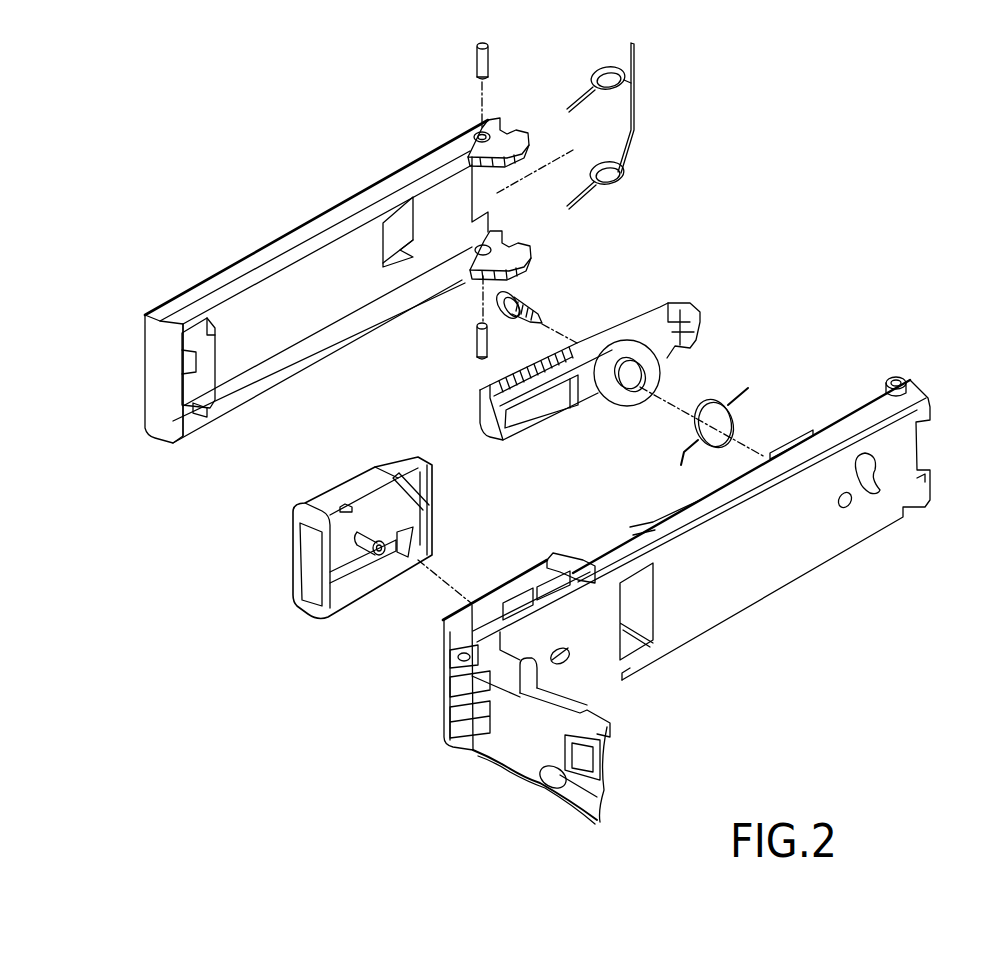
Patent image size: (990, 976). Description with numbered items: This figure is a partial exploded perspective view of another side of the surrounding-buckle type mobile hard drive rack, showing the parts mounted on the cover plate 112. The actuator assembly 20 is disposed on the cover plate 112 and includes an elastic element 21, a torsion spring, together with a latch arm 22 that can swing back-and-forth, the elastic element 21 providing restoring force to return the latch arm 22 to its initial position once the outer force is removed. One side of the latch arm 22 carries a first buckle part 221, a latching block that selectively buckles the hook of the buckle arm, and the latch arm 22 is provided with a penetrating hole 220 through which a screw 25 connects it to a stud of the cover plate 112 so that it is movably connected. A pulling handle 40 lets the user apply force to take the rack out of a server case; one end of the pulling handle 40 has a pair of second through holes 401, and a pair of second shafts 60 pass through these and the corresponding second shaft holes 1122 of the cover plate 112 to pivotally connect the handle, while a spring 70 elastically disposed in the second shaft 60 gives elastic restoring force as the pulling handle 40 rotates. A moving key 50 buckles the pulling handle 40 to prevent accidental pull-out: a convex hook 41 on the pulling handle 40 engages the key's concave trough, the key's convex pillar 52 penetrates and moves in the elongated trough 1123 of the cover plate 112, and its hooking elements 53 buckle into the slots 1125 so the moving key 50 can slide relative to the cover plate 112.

The actuator assembly 20 is at (704, 280).
The elastic element 21 is at (738, 423).
The latch arm 22 is at (612, 325).
The screw 25 is at (542, 322).
The pulling handle 40 is at (292, 236).
The convex hook 41 is at (212, 372).
The moving key 50 is at (342, 492).
The convex pillar 52 is at (433, 527).
The hooking element 53 is at (398, 474).
The second shaft 60 is at (476, 59).
The spring 70 is at (600, 67).
The cover plate 112 is at (800, 556).
The penetrating hole 220 is at (630, 380).
The first buckle part 221 is at (698, 345).
The second through hole 401 is at (478, 133).
The second shaft hole 1122 is at (898, 377).
The elongated trough 1123 is at (568, 658).
The slot 1125 is at (552, 580).